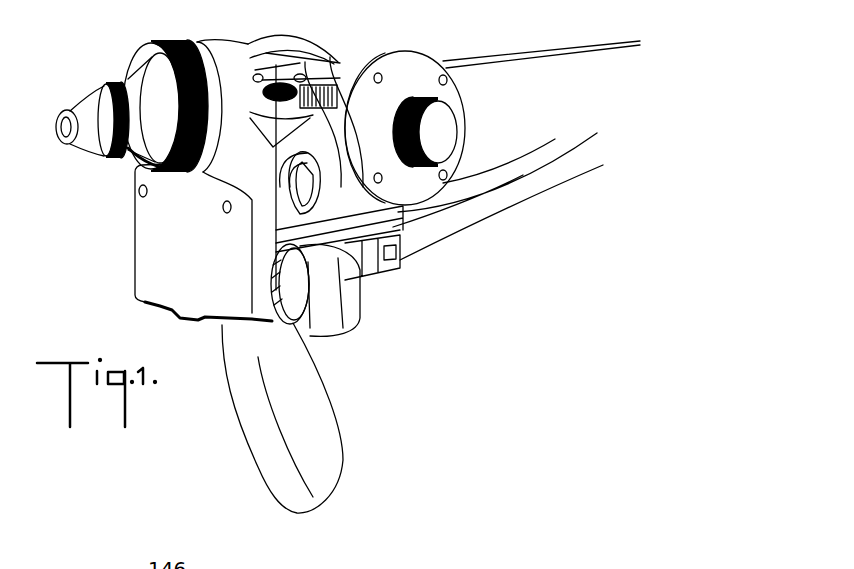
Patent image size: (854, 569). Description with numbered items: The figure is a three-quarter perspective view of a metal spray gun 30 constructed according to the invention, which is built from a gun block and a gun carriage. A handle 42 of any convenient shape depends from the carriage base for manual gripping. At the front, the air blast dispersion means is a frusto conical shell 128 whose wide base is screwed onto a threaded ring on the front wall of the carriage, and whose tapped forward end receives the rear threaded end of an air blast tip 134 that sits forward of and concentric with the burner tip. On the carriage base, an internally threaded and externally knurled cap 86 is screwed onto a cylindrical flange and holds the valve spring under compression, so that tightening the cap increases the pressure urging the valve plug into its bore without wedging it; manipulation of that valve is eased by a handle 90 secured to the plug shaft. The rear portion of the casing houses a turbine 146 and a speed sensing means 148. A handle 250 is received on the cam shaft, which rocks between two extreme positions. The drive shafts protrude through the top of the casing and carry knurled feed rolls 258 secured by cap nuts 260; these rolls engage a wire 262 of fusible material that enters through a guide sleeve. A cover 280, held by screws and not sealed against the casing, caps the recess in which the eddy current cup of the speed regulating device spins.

The metal spray gun 30 is at (125, 240).
The handle 42 is at (322, 408).
The cap 86 is at (286, 268).
The handle 90 is at (357, 315).
The frusto conical shell 128 is at (118, 85).
The air blast tip 134 is at (82, 107).
The turbine 146 is at (279, 38).
The speed sensing means 148 is at (482, 95).
The handle 250 is at (328, 58).
The knurled feed rolls 258 is at (257, 110).
The cap nuts 260 is at (268, 66).
The wire 262 is at (495, 58).
The cover 280 is at (455, 163).